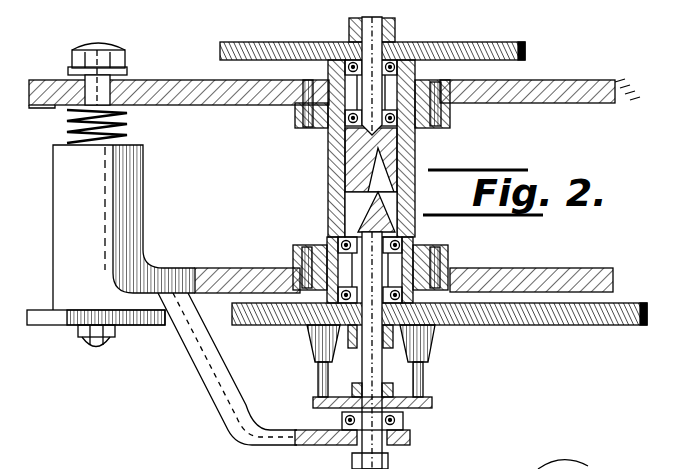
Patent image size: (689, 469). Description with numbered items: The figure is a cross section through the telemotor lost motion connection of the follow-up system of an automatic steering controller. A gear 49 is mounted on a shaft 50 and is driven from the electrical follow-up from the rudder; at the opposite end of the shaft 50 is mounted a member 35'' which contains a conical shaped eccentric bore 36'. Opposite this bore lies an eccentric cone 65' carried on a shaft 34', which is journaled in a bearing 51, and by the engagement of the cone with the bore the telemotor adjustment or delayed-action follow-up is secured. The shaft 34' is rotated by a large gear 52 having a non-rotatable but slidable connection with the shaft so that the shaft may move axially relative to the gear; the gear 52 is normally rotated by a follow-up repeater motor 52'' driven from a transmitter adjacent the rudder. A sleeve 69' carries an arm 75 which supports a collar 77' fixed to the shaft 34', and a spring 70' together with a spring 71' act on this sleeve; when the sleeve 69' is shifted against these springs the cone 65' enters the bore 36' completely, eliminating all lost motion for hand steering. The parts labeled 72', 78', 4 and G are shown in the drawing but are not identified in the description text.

The shaft 50 is at (368, 35).
The gear 49 is at (525, 50).
The spring 70' is at (72, 93).
The spring 72' is at (121, 128).
The conical shaped eccentric bore 36' is at (344, 160).
The member 35'' is at (334, 116).
The sleeve 69' is at (124, 227).
The eccentric cone 65' is at (332, 214).
The bearing 51 is at (417, 243).
The spring 71' is at (96, 347).
The large gear 52 is at (439, 329).
The cone spacer 78' is at (304, 361).
The shaft 34' is at (381, 361).
The collar 77' is at (392, 370).
The arm 75 is at (232, 427).
The member 4 is at (291, 459).
The follow-up repeater motor 52'' is at (370, 440).
The gear G is at (580, 459).